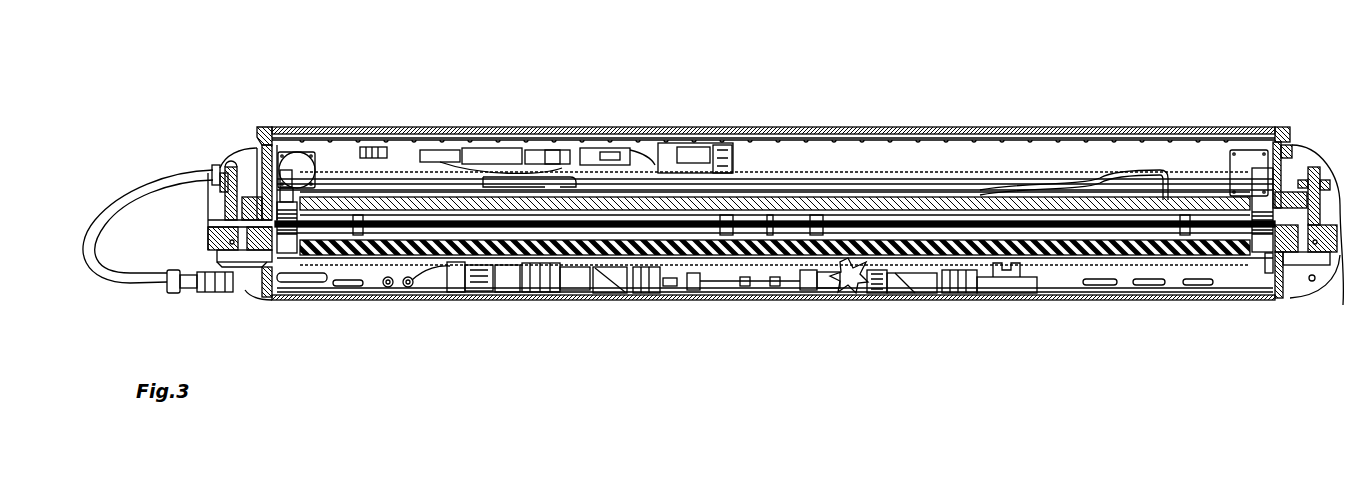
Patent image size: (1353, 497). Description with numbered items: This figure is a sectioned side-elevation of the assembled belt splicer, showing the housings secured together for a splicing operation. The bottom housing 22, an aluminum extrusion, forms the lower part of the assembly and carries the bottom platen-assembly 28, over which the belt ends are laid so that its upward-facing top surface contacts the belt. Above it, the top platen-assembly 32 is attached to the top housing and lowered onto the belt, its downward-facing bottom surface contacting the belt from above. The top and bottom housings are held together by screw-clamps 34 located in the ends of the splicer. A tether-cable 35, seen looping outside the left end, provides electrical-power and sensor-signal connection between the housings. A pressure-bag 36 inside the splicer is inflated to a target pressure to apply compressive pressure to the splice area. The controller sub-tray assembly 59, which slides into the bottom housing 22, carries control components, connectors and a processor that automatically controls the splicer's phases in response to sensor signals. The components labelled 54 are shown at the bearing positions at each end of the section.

The bottom housing 22 is at (733, 300).
The bottom platen-assembly 28 is at (457, 228).
The top platen-assembly 32 is at (558, 222).
The screw-clamps 34 is at (1340, 292).
The tether-cable 35 is at (132, 195).
The pressure-bag 36 is at (993, 200).
The bearing housing 54 is at (297, 170).
The controller sub-tray assembly 59 is at (900, 277).